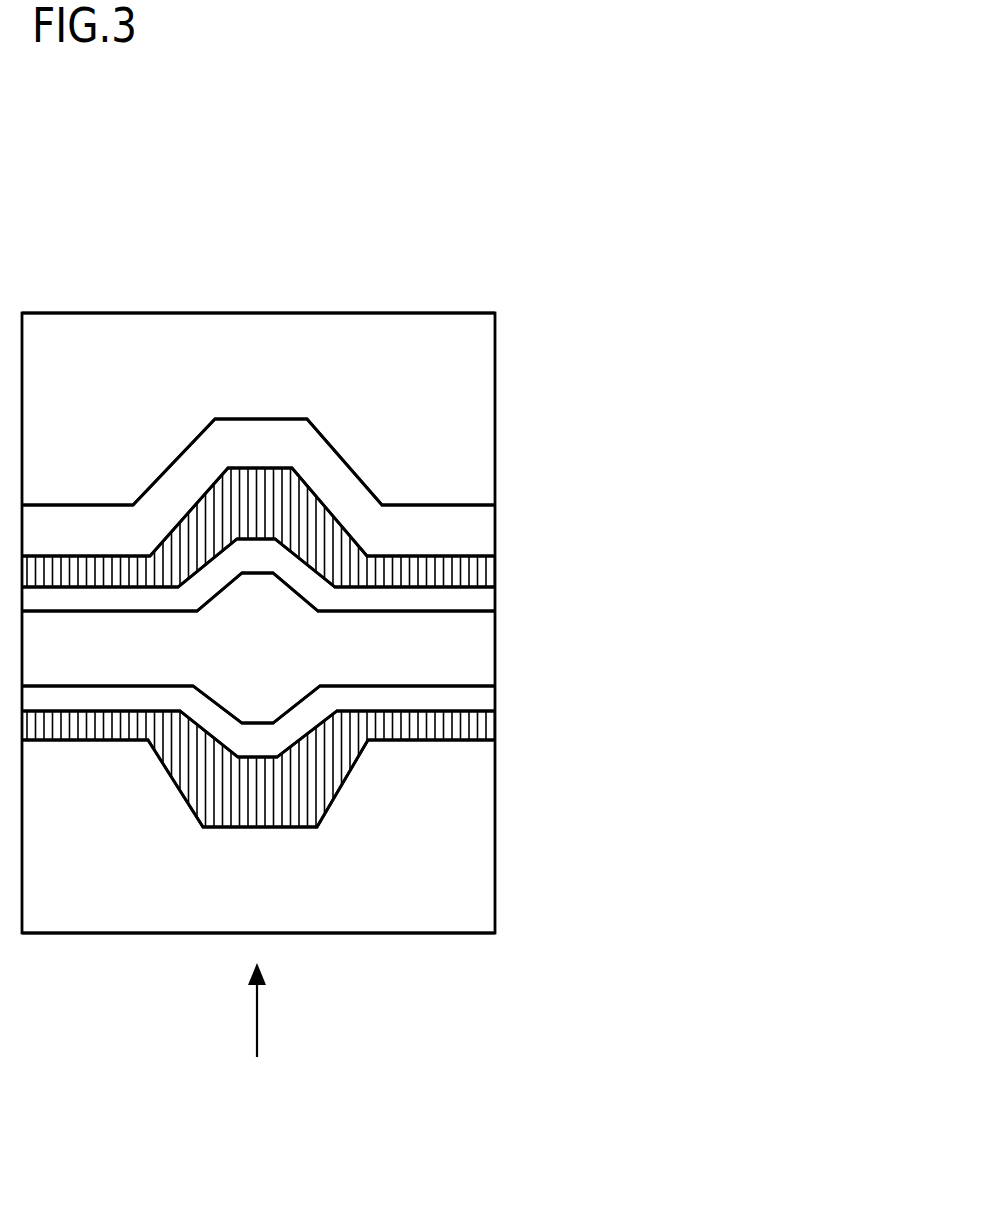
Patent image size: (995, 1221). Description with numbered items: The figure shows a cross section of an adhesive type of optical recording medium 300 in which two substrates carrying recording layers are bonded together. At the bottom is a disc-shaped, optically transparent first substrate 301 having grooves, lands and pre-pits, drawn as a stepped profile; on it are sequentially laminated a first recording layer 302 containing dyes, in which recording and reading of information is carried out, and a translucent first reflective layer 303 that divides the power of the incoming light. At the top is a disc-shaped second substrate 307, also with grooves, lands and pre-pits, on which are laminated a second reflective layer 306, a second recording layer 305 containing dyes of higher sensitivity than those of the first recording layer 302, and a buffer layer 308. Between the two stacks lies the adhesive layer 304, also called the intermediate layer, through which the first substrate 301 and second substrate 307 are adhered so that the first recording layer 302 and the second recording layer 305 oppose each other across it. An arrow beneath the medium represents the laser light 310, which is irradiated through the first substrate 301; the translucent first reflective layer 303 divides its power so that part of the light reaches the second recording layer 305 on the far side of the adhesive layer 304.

The optical recording medium 300 is at (312, 241).
The first substrate 301 is at (487, 825).
The first recording layer 302 is at (487, 734).
The first reflective layer 303 is at (487, 704).
The adhesive layer 304 is at (487, 644).
The second recording layer 305 is at (487, 572).
The second reflective layer 306 is at (487, 532).
The second substrate 307 is at (487, 405).
The buffer layer 308 is at (487, 605).
The laser light 310 is at (331, 1030).